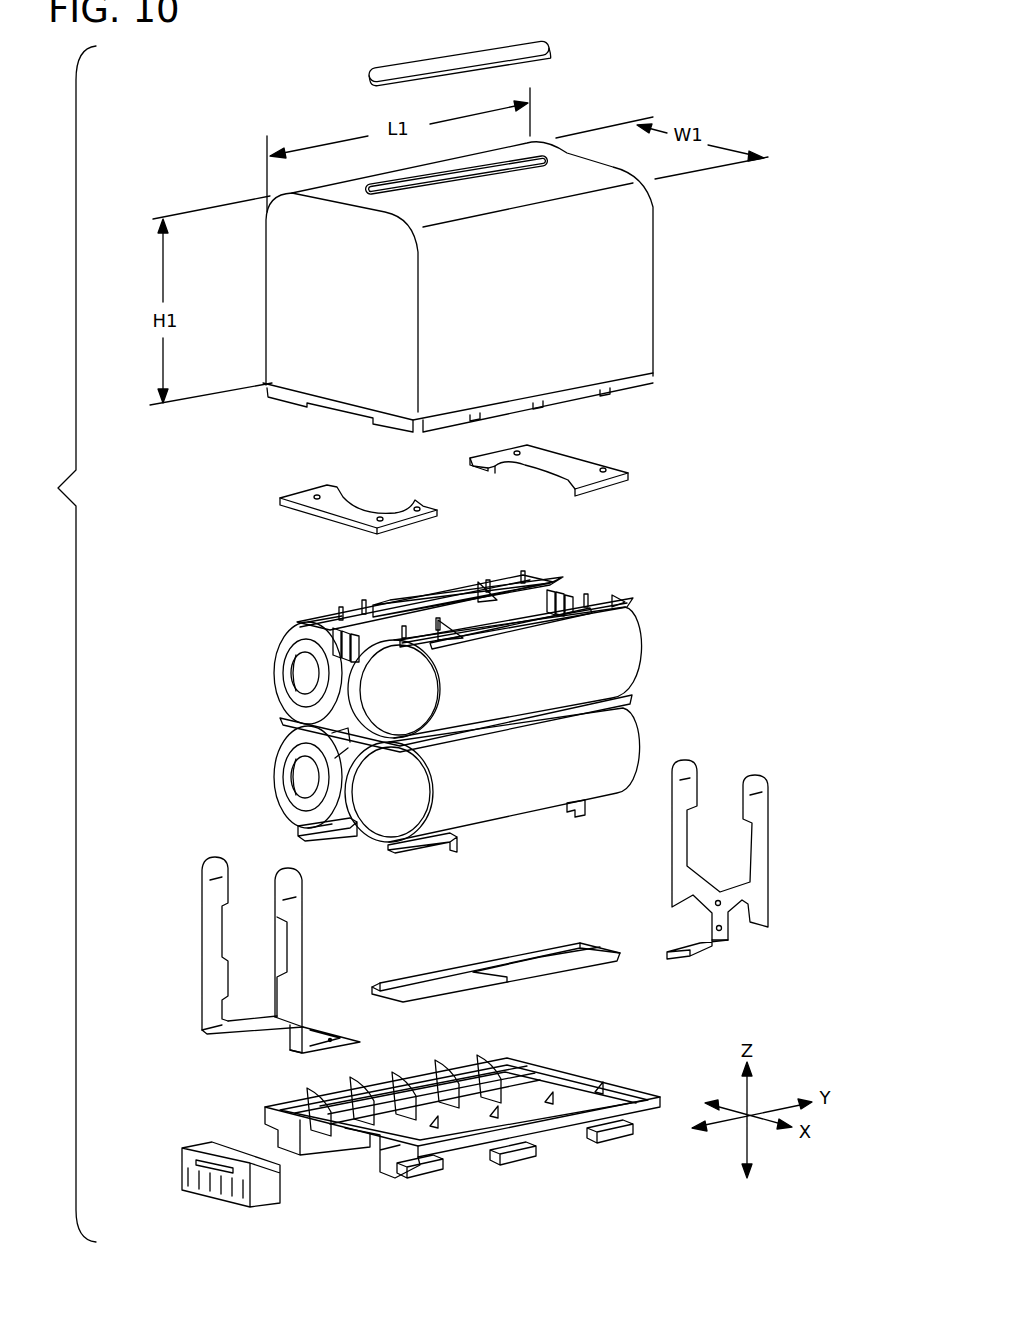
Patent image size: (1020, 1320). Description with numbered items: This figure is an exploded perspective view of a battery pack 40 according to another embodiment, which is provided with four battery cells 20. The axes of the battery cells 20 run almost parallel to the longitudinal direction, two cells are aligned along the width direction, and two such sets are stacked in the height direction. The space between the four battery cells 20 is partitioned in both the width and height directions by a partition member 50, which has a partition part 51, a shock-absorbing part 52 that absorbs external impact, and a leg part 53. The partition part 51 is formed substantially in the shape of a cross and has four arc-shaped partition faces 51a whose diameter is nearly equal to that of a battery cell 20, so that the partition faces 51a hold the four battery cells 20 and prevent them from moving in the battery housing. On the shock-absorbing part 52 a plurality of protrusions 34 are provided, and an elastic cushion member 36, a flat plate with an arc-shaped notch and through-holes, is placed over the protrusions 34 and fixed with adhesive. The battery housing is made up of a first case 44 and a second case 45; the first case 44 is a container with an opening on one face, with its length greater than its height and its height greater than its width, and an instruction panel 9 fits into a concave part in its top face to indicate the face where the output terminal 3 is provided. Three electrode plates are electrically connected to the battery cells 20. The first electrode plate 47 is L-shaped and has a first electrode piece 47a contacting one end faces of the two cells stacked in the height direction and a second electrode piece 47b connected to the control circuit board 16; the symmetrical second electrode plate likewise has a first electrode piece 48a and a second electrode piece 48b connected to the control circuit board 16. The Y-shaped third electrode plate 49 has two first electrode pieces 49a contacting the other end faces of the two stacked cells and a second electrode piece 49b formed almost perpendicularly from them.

The output terminal 3 is at (165, 1179).
The instruction panel 9 is at (410, 72).
The control circuit board 16 is at (437, 984).
The battery cell 20 is at (296, 675).
The protrusion 34 is at (404, 626).
The cushion member 36 is at (305, 498).
The battery pack 40 is at (186, 138).
The first case 44 is at (684, 256).
The second case 45 is at (356, 1192).
The first electrode plate 47 is at (210, 944).
The first electrode piece 47a is at (216, 864).
The second electrode piece 47b is at (253, 1026).
The first electrode piece 48a is at (292, 907).
The second electrode piece 48b is at (356, 1043).
The third electrode plate 49 is at (766, 855).
The first electrode piece 49a is at (682, 782).
The second electrode piece 49b is at (703, 958).
The partition member 50 is at (248, 598).
The partition part 51 is at (345, 745).
The partition face 51a is at (285, 719).
The shock-absorbing part 52 is at (318, 618).
The leg part 53 is at (447, 852).